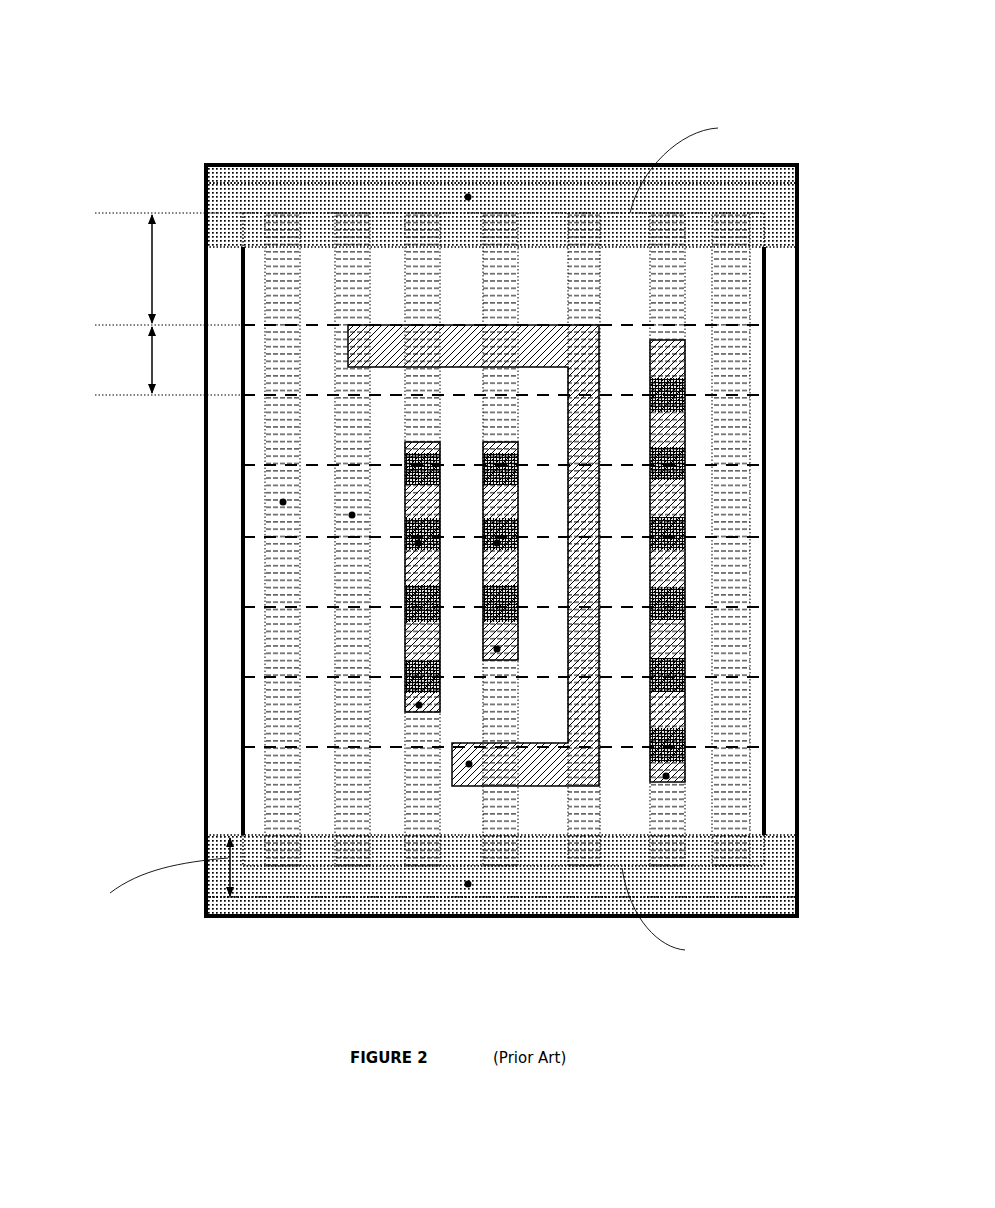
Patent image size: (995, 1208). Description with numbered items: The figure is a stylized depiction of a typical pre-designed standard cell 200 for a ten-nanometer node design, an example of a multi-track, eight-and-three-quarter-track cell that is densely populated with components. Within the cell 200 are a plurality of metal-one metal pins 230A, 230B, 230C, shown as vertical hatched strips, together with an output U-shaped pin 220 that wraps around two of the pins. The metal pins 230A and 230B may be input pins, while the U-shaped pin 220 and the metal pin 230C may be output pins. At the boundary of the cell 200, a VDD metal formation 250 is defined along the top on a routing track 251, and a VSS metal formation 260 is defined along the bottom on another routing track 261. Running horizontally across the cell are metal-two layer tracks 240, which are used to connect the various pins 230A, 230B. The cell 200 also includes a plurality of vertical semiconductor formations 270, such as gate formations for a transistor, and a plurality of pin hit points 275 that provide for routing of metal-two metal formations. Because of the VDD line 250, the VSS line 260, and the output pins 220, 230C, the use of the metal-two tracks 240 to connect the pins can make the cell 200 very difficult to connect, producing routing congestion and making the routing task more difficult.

The standard cell 200 is at (443, 489).
The VDD metal formation 250 is at (468, 197).
The routing track 251 is at (470, 183).
The metal-2 layer tracks 240 is at (323, 465).
The vertical semiconductor formations 270 is at (352, 515).
The pin hit point 275 is at (497, 543).
The metal pin 230A is at (419, 705).
The metal pin 230B is at (497, 649).
The metal pin 230C is at (666, 776).
The U-shaped pin 220 is at (469, 764).
The VSS metal formation 260 is at (468, 884).
The routing track 261 is at (553, 868).